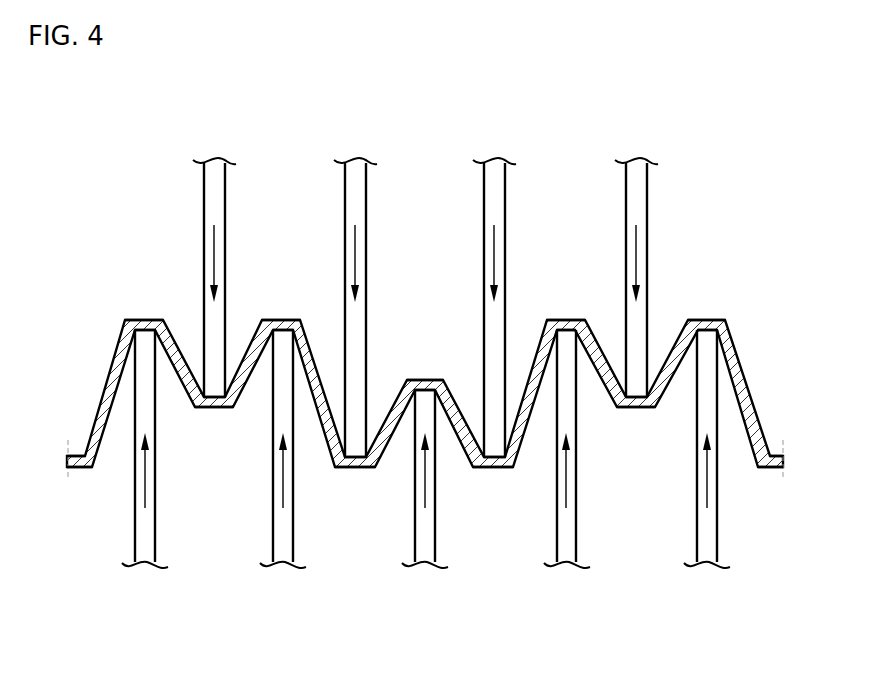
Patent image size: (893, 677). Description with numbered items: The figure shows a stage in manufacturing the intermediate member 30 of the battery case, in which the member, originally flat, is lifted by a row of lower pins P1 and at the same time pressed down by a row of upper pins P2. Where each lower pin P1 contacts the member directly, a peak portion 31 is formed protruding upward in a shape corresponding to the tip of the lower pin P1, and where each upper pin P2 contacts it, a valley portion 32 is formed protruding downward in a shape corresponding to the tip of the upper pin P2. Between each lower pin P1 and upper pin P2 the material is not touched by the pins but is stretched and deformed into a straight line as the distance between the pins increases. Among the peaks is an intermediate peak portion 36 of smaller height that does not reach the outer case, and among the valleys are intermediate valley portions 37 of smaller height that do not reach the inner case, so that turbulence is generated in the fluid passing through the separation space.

The intermediate member 30 is at (103, 362).
The peak portion 31 is at (146, 318).
The valley portion 32 is at (73, 470).
The intermediate peak portion 36 is at (426, 378).
The intermediate valley portion 37 is at (214, 410).
The lower pin P1 is at (135, 500).
The upper pin P2 is at (225, 195).